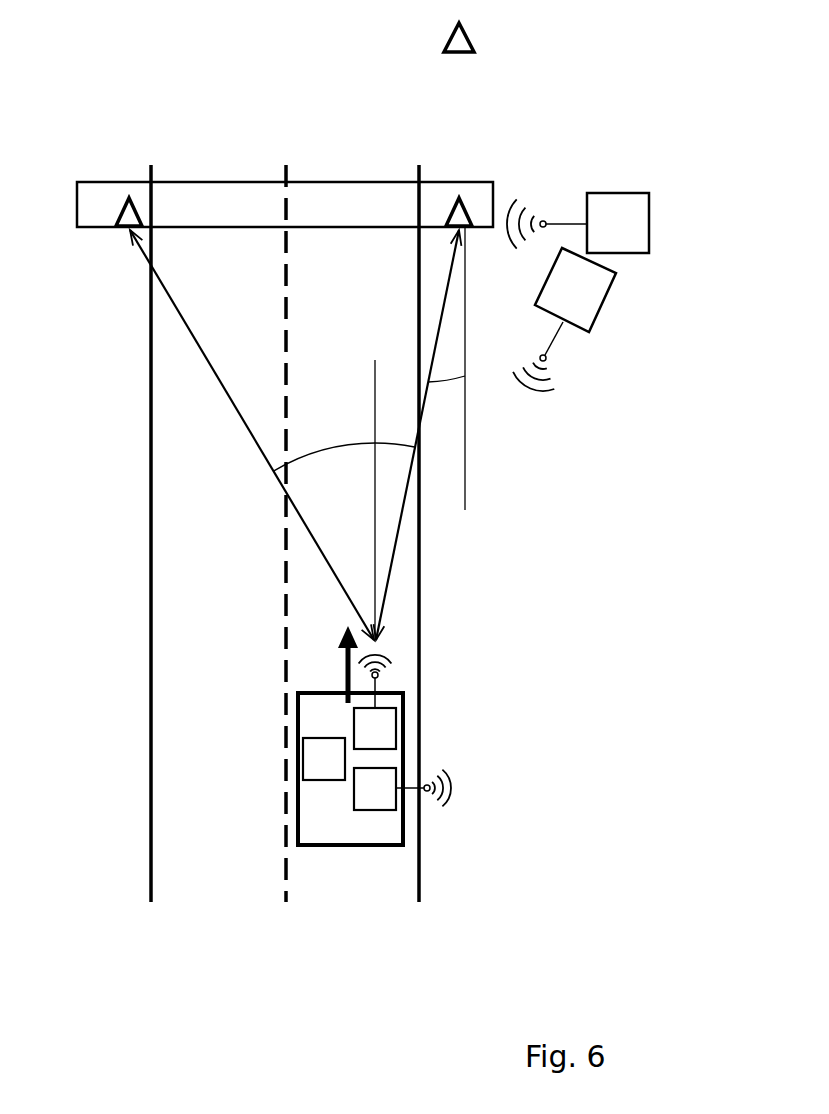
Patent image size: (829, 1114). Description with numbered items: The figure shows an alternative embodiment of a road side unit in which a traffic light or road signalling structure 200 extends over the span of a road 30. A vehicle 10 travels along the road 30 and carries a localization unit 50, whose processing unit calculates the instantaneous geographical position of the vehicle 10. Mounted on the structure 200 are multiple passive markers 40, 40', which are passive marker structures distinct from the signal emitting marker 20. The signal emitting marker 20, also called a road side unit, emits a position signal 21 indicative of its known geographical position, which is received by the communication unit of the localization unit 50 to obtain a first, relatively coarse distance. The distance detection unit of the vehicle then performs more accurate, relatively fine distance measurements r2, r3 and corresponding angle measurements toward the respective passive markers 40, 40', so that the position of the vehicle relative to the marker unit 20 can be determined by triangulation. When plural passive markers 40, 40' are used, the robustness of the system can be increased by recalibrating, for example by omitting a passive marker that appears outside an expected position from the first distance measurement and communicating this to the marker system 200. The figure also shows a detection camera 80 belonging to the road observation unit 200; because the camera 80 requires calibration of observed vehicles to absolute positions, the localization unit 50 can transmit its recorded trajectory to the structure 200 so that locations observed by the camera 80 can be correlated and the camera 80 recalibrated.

The vehicle 10 is at (350, 846).
The signal emitting marker 20 is at (637, 255).
The position signal 21 is at (549, 199).
The road 30 is at (202, 758).
The passive marker 40 is at (477, 167).
The passive marker 40' is at (105, 167).
The localization unit 50 is at (342, 837).
The detection camera 80 is at (598, 315).
The road signalling structure 200 is at (323, 200).
The distance measurement r2 is at (440, 318).
The distance measurement r3 is at (252, 435).